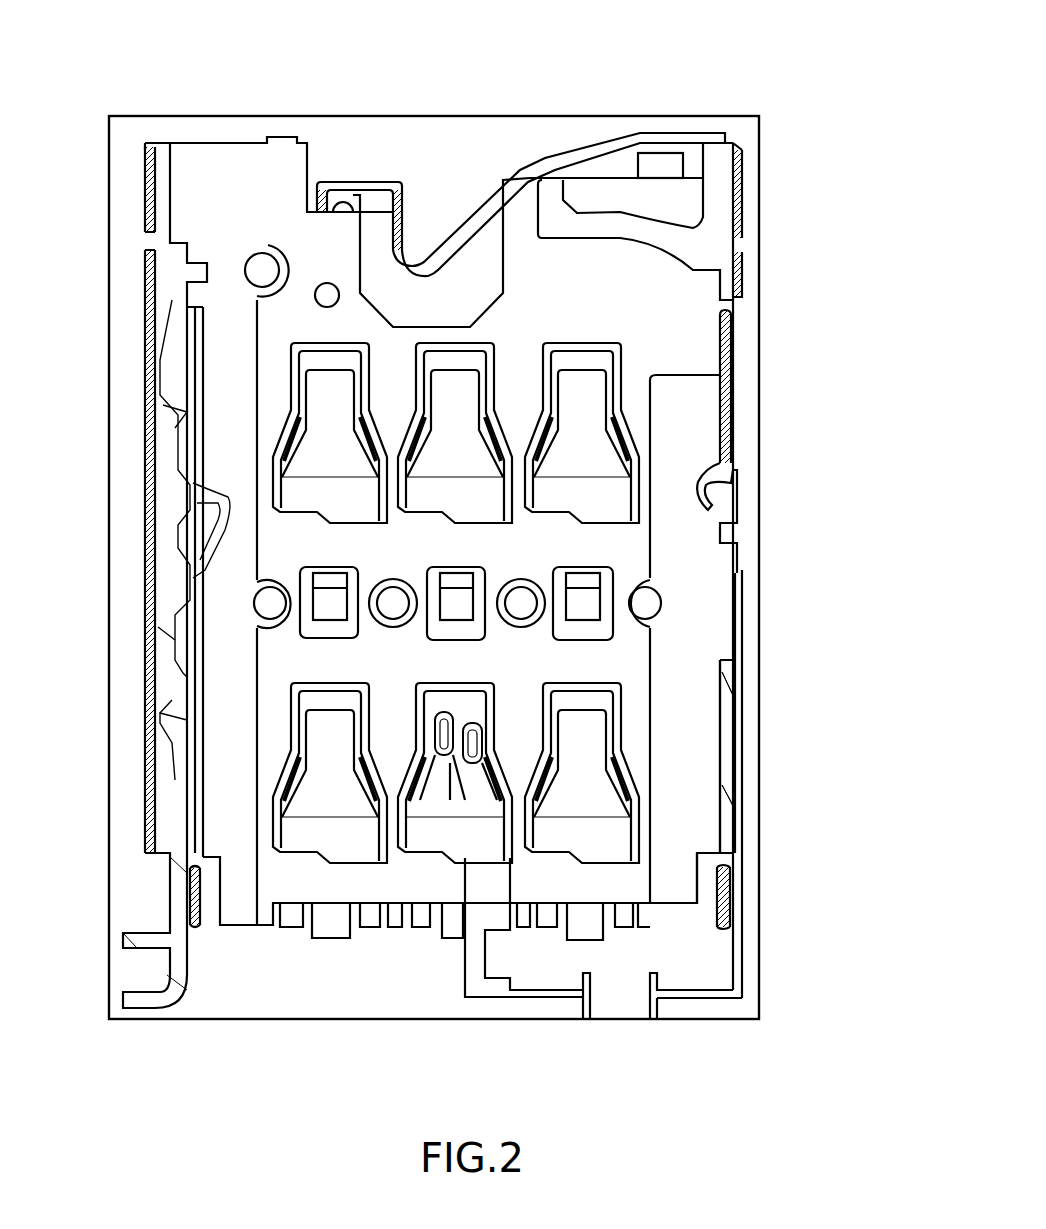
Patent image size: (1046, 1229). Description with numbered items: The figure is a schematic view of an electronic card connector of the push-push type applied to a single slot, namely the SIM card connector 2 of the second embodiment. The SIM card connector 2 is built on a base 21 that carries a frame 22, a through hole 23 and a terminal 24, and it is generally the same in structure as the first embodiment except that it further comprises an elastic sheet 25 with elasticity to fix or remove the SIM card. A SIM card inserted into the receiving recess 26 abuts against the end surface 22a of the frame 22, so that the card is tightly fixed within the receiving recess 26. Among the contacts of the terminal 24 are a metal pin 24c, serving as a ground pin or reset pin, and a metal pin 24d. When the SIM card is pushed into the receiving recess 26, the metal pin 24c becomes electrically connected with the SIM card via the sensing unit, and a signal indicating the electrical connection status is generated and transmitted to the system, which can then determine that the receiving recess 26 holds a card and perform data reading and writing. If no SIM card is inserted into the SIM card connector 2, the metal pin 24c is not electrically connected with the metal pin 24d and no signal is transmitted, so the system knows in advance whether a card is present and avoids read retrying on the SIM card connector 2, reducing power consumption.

The SIM card connector 2 is at (262, 41).
The base 21 is at (680, 287).
The frame 22 is at (725, 247).
The end surface 22a is at (572, 233).
The through hole 23 is at (627, 363).
The terminal 24 is at (627, 458).
The metal pin 24c is at (440, 717).
The metal pin 24d is at (485, 748).
The elastic sheet 25 is at (358, 180).
The receiving recess 26 is at (697, 835).